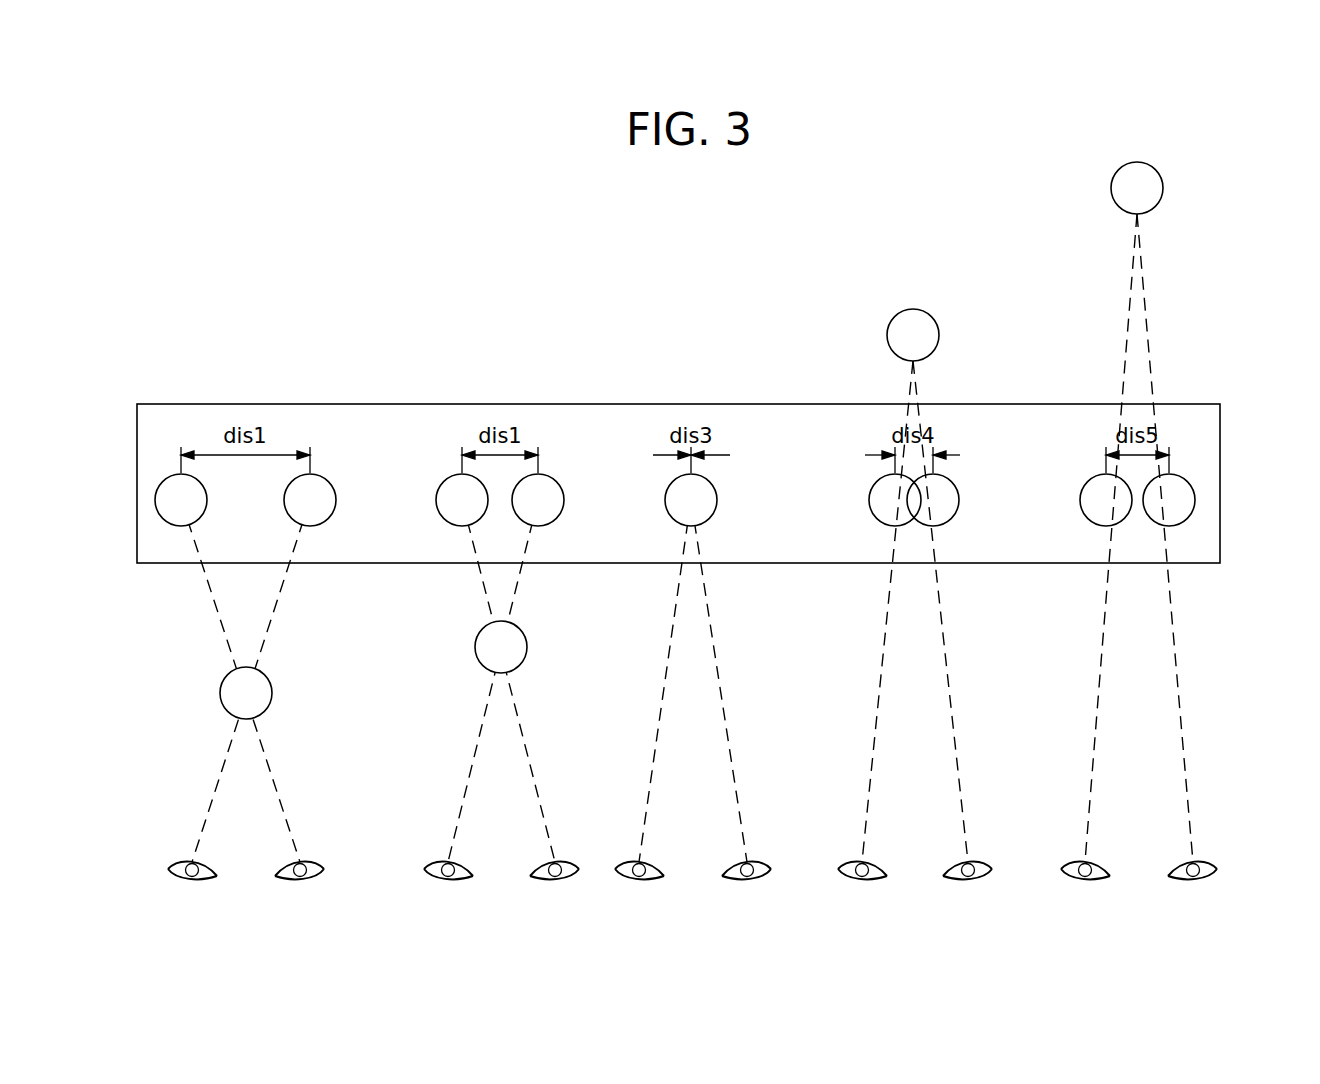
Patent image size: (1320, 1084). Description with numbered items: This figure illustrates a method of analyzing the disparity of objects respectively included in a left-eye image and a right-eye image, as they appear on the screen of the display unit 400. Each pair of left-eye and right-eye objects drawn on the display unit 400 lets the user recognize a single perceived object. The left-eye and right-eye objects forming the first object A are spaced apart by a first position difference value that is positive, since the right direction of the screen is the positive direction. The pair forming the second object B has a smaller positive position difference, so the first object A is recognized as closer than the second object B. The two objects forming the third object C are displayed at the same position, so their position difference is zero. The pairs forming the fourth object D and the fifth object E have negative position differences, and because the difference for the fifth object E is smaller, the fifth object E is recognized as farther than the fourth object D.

The display unit 400 is at (717, 483).
The first object A is at (245, 676).
The second object B is at (501, 676).
The third object C is at (710, 676).
The fourth object D is at (915, 594).
The fifth object E is at (1139, 520).